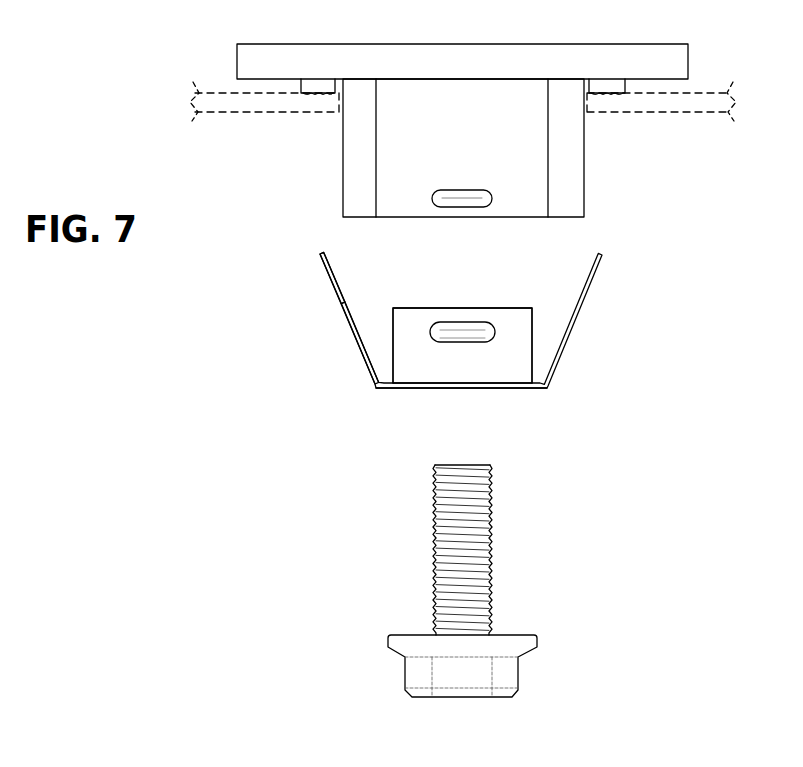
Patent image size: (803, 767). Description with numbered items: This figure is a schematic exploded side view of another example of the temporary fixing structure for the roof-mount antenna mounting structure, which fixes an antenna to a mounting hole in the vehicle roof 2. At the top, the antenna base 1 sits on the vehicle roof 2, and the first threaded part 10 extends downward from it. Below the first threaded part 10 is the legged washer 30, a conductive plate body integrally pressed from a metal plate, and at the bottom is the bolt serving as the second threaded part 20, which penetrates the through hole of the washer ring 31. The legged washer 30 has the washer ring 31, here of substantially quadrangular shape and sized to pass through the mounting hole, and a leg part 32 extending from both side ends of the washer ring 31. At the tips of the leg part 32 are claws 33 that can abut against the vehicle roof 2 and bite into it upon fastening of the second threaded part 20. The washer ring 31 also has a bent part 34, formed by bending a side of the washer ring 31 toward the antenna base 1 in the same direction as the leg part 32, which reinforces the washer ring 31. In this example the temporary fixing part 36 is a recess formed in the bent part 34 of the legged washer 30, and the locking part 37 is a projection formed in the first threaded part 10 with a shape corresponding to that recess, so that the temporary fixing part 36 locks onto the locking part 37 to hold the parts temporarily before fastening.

The antenna base 1 is at (680, 58).
The vehicle roof 2 is at (693, 112).
The first threaded part 10 is at (350, 165).
The second threaded part 20 is at (512, 683).
The legged washer 30 is at (590, 348).
The washer ring 31 is at (403, 388).
The leg part 32 is at (345, 320).
The claws 33 is at (320, 252).
The bent part 34 is at (498, 373).
The temporary fixing part 36 is at (448, 328).
The locking part 37 is at (480, 204).